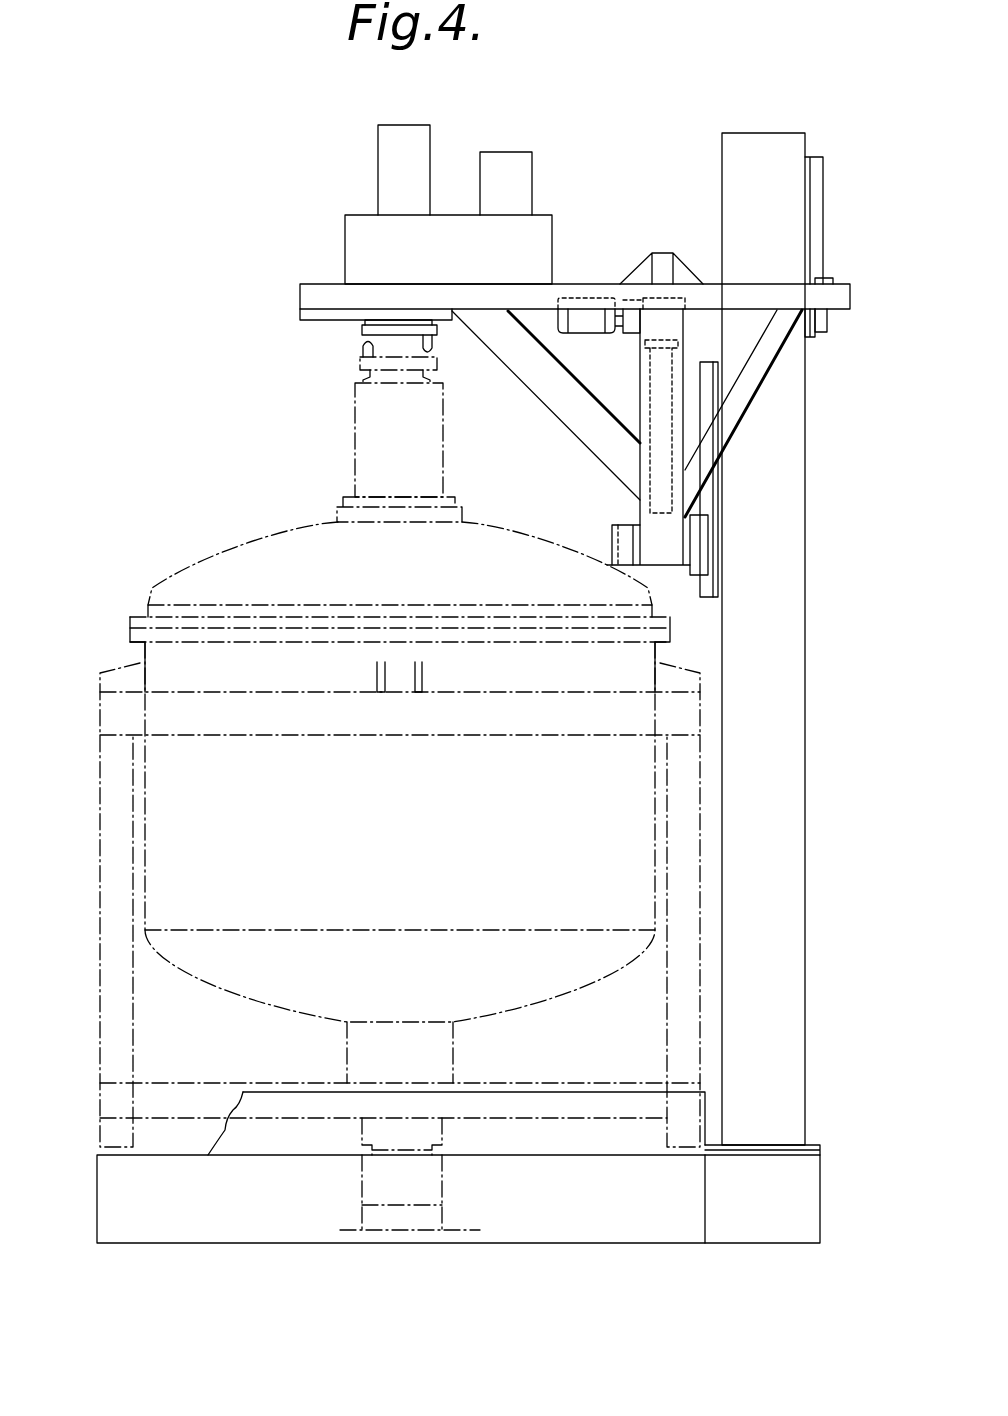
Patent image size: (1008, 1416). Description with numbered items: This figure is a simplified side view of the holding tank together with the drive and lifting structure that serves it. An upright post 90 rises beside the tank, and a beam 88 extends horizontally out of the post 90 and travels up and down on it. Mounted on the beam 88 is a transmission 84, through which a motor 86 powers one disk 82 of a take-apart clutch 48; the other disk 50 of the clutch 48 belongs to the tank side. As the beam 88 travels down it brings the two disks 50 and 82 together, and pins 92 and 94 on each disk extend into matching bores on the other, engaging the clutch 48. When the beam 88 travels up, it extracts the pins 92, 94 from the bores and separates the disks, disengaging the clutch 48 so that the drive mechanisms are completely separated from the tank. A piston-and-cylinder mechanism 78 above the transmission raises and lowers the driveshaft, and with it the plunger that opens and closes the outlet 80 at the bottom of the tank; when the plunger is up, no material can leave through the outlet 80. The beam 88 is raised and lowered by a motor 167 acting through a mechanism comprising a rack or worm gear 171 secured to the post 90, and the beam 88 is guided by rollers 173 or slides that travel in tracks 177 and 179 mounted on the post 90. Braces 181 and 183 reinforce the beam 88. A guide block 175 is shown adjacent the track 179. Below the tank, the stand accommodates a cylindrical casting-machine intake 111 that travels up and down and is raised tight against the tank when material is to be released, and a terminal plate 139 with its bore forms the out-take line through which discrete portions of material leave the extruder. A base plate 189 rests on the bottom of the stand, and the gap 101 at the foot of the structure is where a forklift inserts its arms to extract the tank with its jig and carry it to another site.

The take-apart clutch 48 is at (346, 346).
The disk 50 is at (437, 373).
The piston-and-cylinder mechanism 78 is at (393, 157).
The outlet 80 is at (428, 1135).
The disk 82 is at (360, 330).
The transmission 84 is at (360, 240).
The motor 86 is at (520, 176).
The beam 88 is at (315, 292).
The post 90 is at (805, 664).
The pin 92 is at (436, 342).
The pin 94 is at (363, 350).
The gap 101 is at (195, 1136).
The casting-machine intake 111 is at (430, 1188).
The terminal plate 139 is at (397, 1218).
The motor 167 is at (590, 324).
The rack or worm gear 171 is at (650, 467).
The roller 173 is at (831, 279).
The guide block 175 is at (708, 548).
The track 177 is at (826, 178).
The track 179 is at (707, 493).
The brace 181 is at (762, 370).
The brace 183 is at (553, 398).
The base plate 189 is at (598, 1140).